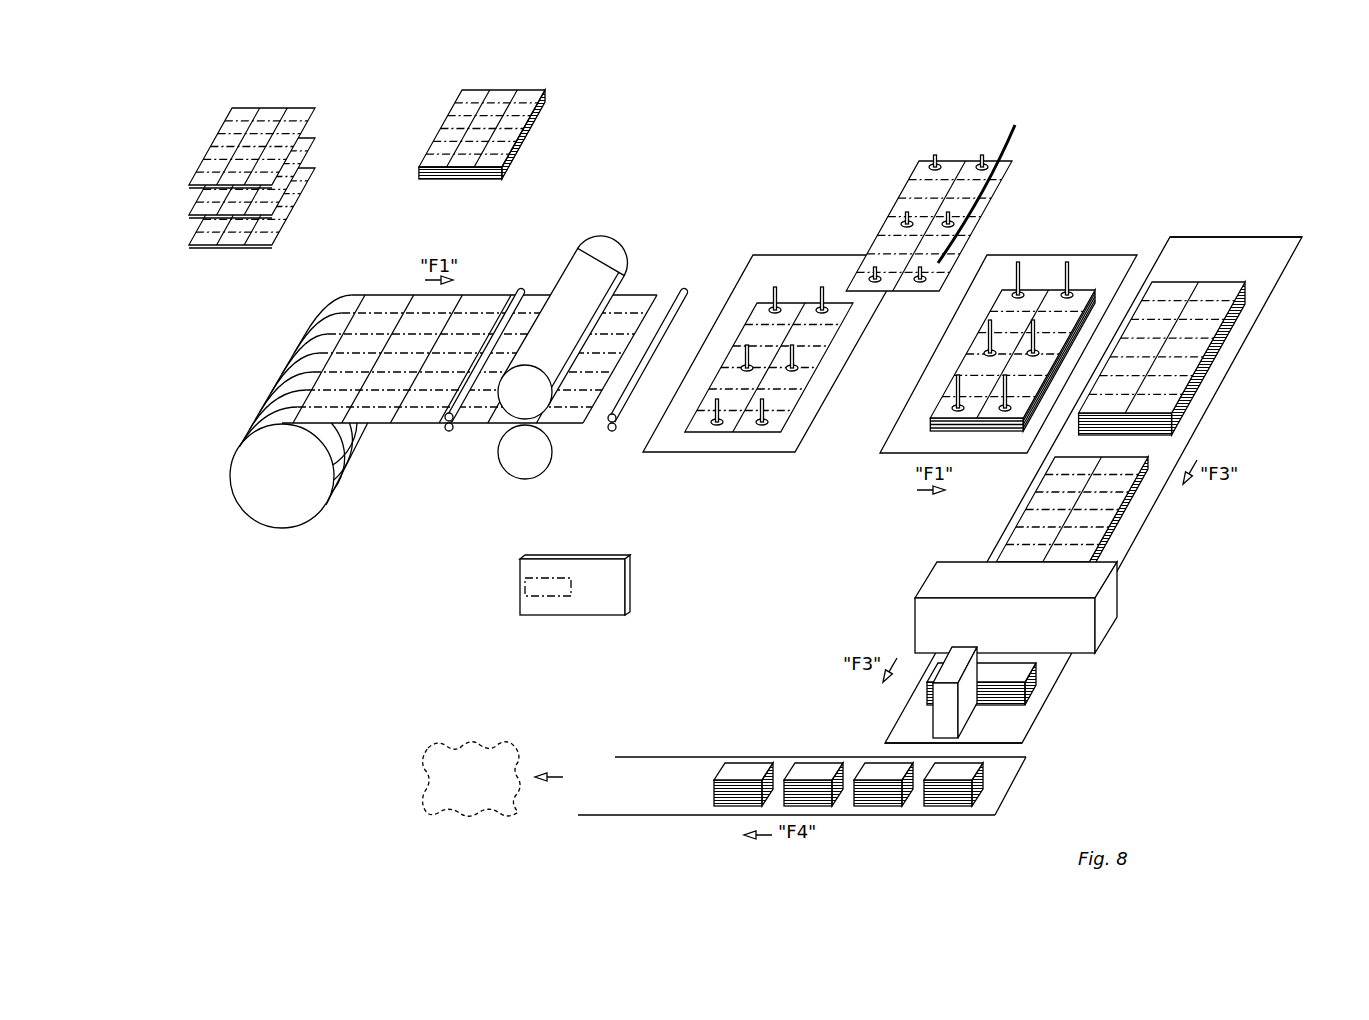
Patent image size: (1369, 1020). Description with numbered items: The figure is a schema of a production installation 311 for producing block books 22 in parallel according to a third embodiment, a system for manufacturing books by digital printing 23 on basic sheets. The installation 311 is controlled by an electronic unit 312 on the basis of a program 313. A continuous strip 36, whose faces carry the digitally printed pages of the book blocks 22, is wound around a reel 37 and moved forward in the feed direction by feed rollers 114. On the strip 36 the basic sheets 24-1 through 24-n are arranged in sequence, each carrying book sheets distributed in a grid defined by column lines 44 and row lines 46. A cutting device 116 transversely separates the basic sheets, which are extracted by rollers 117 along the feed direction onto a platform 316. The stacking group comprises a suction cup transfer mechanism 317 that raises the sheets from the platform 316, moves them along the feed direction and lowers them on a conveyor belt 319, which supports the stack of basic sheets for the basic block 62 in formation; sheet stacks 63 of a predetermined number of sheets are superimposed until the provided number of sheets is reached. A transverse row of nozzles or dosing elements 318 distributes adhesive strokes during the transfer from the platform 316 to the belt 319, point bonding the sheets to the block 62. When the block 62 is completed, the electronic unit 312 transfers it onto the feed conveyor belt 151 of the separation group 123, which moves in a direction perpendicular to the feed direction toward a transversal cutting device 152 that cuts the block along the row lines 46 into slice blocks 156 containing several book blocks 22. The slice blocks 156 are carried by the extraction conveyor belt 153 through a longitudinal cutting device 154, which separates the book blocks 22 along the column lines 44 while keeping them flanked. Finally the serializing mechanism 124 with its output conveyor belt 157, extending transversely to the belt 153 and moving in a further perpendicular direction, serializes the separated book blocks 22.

The sheet stacks 63 is at (190, 152).
The basic sheet 24-n is at (302, 110).
The basic sheet 24-1 is at (262, 252).
The basic block 62 is at (443, 102).
The row lines 46 is at (517, 122).
The column lines 44 is at (478, 168).
The reel 37 is at (242, 486).
The strip 36 is at (373, 425).
The cutting device 116 is at (557, 268).
The feed rollers 114 is at (452, 431).
The rollers 117 is at (600, 426).
The suction cup transfer mechanism 317 is at (717, 243).
The platform 316 is at (783, 440).
The row of nozzles or dosing elements 318 is at (948, 248).
The conveyor belt 319 is at (900, 448).
The separation group 123 is at (1248, 222).
The feed conveyor belt 151 is at (1257, 262).
The extraction conveyor belt 153 is at (1017, 730).
The transversal cutting device 152 is at (898, 592).
The slice blocks 156 is at (1043, 683).
The longitudinal cutting device 154 is at (920, 722).
The output conveyor belt 157 is at (657, 802).
The serializing mechanism 124 is at (1040, 798).
The block books 22 is at (808, 752).
The digital printing 23 is at (455, 738).
The electronic unit 312 is at (628, 578).
The program 313 is at (538, 593).
The production installation 311 is at (1178, 118).